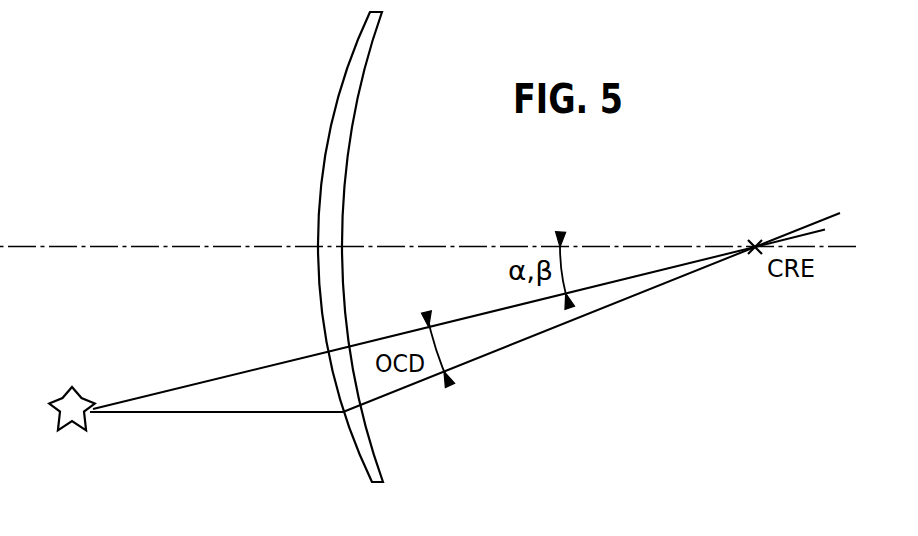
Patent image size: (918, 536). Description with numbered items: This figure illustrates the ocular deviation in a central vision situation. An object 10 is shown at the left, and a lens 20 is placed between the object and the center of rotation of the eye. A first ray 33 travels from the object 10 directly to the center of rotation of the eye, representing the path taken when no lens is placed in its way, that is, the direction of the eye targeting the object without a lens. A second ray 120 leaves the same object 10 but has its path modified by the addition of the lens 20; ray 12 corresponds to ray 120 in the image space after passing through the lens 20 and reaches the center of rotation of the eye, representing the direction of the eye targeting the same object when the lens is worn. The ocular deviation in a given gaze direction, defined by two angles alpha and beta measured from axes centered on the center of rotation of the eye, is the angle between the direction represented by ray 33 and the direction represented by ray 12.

The lens 20 is at (350, 57).
The object 10 is at (67, 393).
The first ray 33 is at (213, 377).
The second ray 120 is at (237, 415).
The ray in image space 12 is at (597, 312).